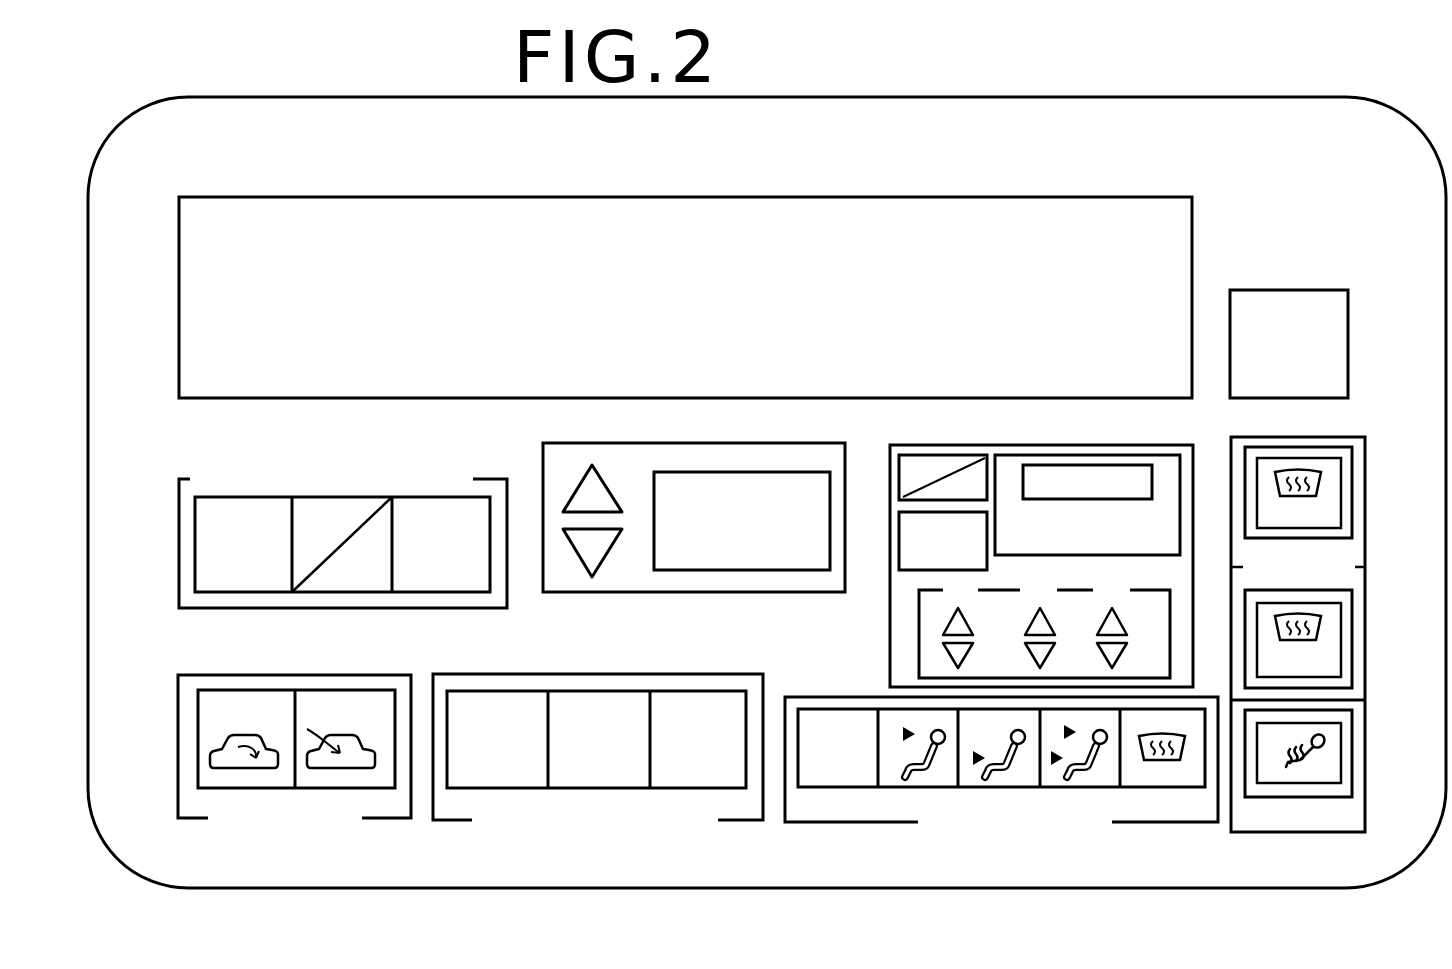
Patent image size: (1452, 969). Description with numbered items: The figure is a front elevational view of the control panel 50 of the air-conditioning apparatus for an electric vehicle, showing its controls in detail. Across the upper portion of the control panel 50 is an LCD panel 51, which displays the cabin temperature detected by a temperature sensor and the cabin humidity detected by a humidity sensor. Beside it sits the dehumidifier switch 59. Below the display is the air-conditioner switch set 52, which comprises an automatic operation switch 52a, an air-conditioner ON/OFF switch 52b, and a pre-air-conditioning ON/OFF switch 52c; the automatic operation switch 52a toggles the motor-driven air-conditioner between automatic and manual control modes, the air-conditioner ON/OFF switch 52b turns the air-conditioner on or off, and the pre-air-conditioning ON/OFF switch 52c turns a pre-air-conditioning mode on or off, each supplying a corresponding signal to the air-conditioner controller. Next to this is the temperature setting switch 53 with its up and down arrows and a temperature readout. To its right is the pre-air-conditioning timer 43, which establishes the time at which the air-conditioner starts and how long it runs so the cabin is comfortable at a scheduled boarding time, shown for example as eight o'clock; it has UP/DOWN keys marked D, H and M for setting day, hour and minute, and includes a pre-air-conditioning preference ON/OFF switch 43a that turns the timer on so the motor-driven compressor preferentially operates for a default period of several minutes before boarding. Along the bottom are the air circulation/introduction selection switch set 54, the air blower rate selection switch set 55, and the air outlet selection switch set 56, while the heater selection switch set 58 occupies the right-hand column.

The control panel 50 is at (996, 92).
The LCD panel 51 is at (888, 197).
The air-conditioner switch set 52 is at (305, 558).
The automatic operation switch 52a is at (248, 592).
The air-conditioner ON/OFF switch 52b is at (323, 592).
The pre-air-conditioning ON/OFF switch 52c is at (445, 592).
The temperature setting switch 53 is at (572, 585).
The pre-air-conditioning timer 43 is at (990, 544).
The pre-air-conditioning preference ON/OFF switch 43a is at (912, 572).
The air circulation/introduction selection switch set 54 is at (193, 812).
The air blower rate selection switch set 55 is at (453, 812).
The air outlet selection switch set 56 is at (822, 805).
The heater selection switch set 58 is at (1367, 508).
The dehumidifier switch 59 is at (1290, 290).